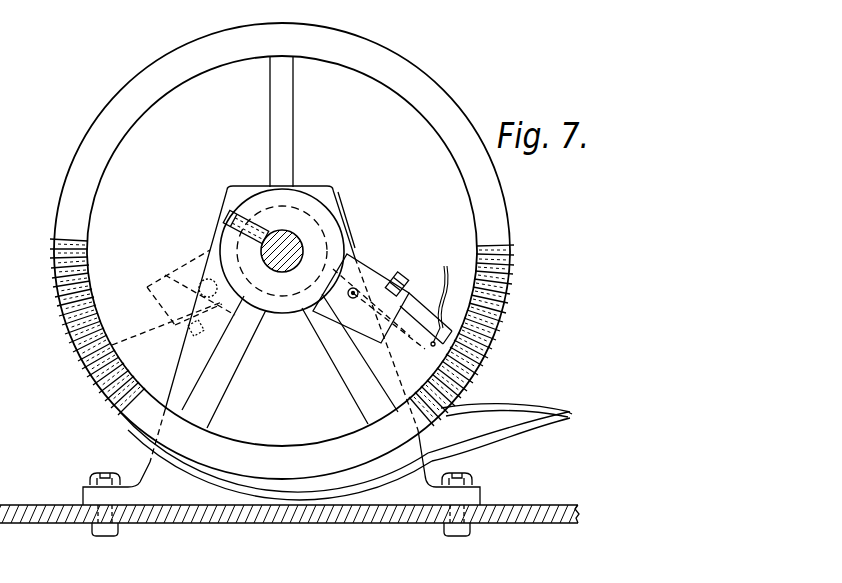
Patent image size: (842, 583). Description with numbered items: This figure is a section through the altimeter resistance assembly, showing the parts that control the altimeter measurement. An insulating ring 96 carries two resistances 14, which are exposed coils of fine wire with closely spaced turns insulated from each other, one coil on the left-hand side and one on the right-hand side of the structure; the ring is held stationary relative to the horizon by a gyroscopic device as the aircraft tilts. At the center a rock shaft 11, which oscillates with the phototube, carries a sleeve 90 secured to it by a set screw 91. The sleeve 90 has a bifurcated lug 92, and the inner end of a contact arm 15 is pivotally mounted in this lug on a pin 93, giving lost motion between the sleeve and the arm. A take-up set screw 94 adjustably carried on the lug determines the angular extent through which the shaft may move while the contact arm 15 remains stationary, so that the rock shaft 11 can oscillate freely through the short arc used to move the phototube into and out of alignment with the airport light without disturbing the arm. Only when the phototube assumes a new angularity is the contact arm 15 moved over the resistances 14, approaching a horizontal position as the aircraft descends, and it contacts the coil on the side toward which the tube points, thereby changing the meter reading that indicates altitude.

The rock shaft 11 is at (302, 241).
The resistances 14 is at (66, 328).
The contact arm 15 is at (438, 331).
The sleeve 90 is at (343, 243).
The set screw 91 is at (228, 212).
The bifurcated lug 92 is at (380, 262).
The pin 93 is at (312, 320).
The take-up set screw 94 is at (404, 278).
The insulating ring 96 is at (494, 213).